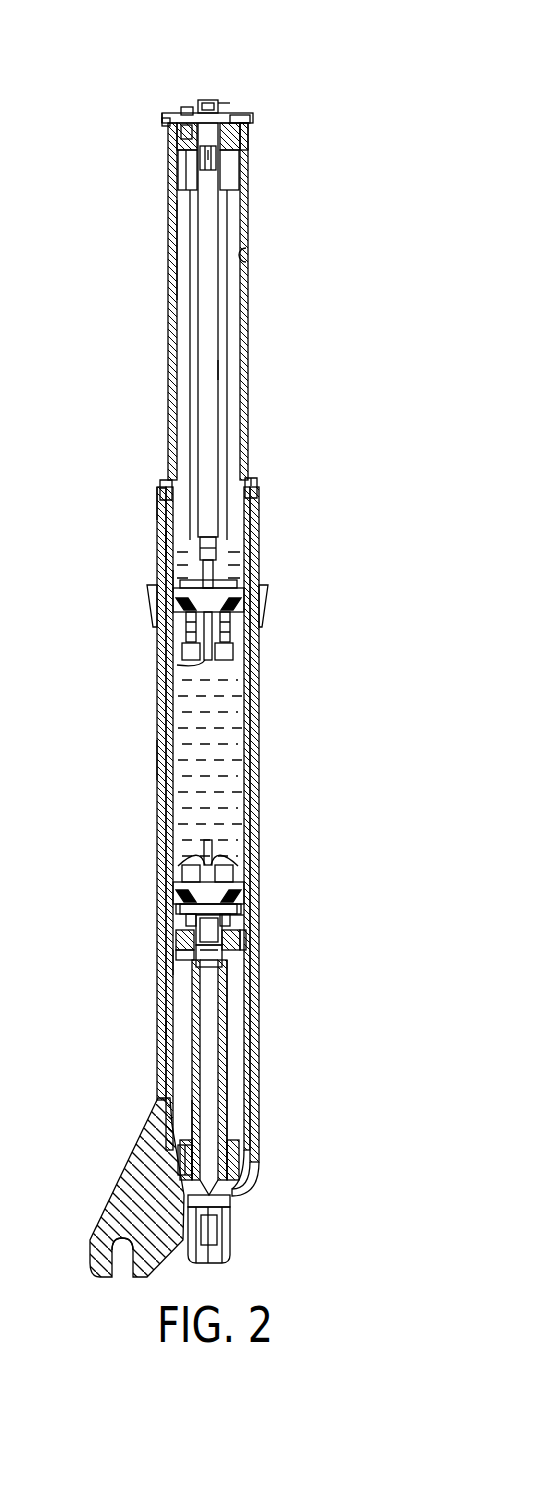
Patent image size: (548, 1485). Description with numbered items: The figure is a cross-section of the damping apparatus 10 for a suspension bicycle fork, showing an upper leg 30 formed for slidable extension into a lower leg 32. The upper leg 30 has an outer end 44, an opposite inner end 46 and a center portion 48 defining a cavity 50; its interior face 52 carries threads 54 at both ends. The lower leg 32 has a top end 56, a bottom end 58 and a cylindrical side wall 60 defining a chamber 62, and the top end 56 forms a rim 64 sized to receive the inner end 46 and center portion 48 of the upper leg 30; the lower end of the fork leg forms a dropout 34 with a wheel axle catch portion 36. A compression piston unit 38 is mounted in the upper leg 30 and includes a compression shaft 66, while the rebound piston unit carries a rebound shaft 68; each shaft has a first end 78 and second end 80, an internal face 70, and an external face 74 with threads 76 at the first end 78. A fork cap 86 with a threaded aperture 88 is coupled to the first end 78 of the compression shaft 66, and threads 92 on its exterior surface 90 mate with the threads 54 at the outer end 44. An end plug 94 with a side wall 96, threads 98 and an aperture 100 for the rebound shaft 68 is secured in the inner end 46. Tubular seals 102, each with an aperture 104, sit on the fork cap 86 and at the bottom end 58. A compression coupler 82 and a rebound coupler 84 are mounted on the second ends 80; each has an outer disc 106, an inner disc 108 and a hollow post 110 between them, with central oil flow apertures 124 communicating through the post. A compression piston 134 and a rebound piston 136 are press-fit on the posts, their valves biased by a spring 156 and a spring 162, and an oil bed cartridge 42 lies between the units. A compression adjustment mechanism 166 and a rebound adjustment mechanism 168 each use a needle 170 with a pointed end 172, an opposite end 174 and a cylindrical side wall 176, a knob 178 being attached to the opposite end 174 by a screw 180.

The damping apparatus 10 is at (78, 138).
The upper leg 30 is at (244, 312).
The lower leg 32 is at (257, 730).
The dropout 34 is at (118, 1172).
The wheel axle catch portion 36 is at (95, 1265).
The compression piston unit 38 is at (170, 555).
The oil bed cartridge 42 is at (250, 755).
The outer end 44 is at (253, 118).
The inner end 46 is at (255, 955).
The center portion 48 is at (173, 370).
The cavity 50 is at (175, 245).
The interior face 52 is at (246, 255).
The threads 54 is at (205, 160).
The top end 56 is at (165, 505).
The bottom end 58 is at (250, 1180).
The side wall 60 is at (160, 760).
The chamber 62 is at (175, 492).
The rim 64 is at (251, 480).
The compression shaft 66 is at (228, 225).
The rebound shaft 68 is at (255, 1070).
The internal face 70 is at (208, 338).
The external face 74 is at (190, 330).
The threads 76 is at (238, 135).
The first end 78 is at (232, 120).
The second end 80 is at (245, 590).
The compression coupler 82 is at (160, 630).
The rebound coupler 84 is at (200, 870).
The fork cap 86 is at (172, 115).
The threaded aperture 88 is at (185, 138).
The exterior surface 90 is at (163, 118).
The threads 92 is at (245, 150).
The end plug 94 is at (185, 965).
The side wall 96 is at (190, 945).
The threads 98 is at (253, 940).
The aperture 100 is at (200, 915).
The tubular seal 102 is at (236, 190).
The aperture 104 is at (185, 190).
The outer disc 106 is at (238, 600).
The inner disc 108 is at (240, 665).
The hollow post 110 is at (228, 628).
The central oil flow aperture 124 is at (175, 665).
The compression piston 134 is at (172, 583).
The rebound piston 136 is at (180, 893).
The spring 156 is at (200, 640).
The spring 162 is at (250, 902).
The compression adjustment mechanism 166 is at (224, 103).
The rebound adjustment mechanism 168 is at (237, 1255).
The needle 170 is at (210, 285).
The pointed end 172 is at (240, 568).
The opposite end 174 is at (190, 110).
The cylindrical side wall 176 is at (222, 372).
The knob 178 is at (240, 118).
The screw 180 is at (207, 100).